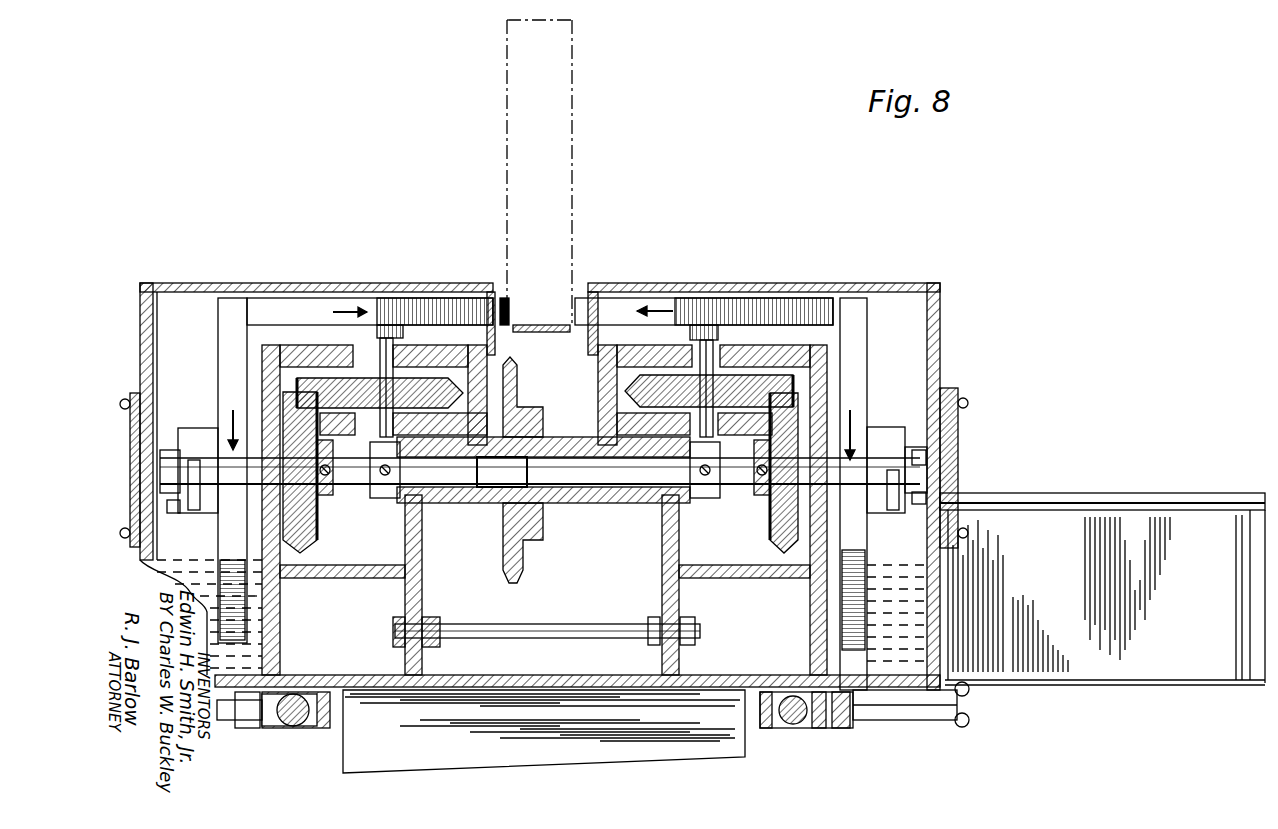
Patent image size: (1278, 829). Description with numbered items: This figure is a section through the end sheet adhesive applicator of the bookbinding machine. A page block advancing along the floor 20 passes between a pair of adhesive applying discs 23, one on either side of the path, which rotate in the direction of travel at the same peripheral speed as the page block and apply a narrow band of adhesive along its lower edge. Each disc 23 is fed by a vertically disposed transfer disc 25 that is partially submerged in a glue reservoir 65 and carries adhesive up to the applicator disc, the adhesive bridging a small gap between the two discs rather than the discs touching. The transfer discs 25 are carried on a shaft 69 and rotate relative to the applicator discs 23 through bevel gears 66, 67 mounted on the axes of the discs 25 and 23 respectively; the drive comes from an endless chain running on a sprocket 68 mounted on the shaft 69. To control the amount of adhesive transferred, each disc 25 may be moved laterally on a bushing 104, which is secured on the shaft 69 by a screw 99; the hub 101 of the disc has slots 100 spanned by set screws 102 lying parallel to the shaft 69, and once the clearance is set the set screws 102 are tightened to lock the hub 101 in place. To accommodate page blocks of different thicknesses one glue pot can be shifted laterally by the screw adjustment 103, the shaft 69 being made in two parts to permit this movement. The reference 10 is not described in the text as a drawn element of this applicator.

The column 10 is at (543, 107).
The floor 20 is at (548, 333).
The adhesive applying discs 23 is at (430, 310).
The transfer discs 25 is at (218, 373).
The glue reservoirs 65 is at (965, 583).
The bevel gear 66 is at (305, 540).
The bevel gear 67 is at (320, 380).
The sprocket 68 is at (517, 556).
The shaft 69 is at (632, 488).
The screw 99 is at (165, 468).
The slots 100 is at (193, 510).
The hubs 101 is at (199, 430).
The set screws 102 is at (168, 505).
The screw adjustment 103 is at (590, 607).
The bushings 104 is at (173, 450).